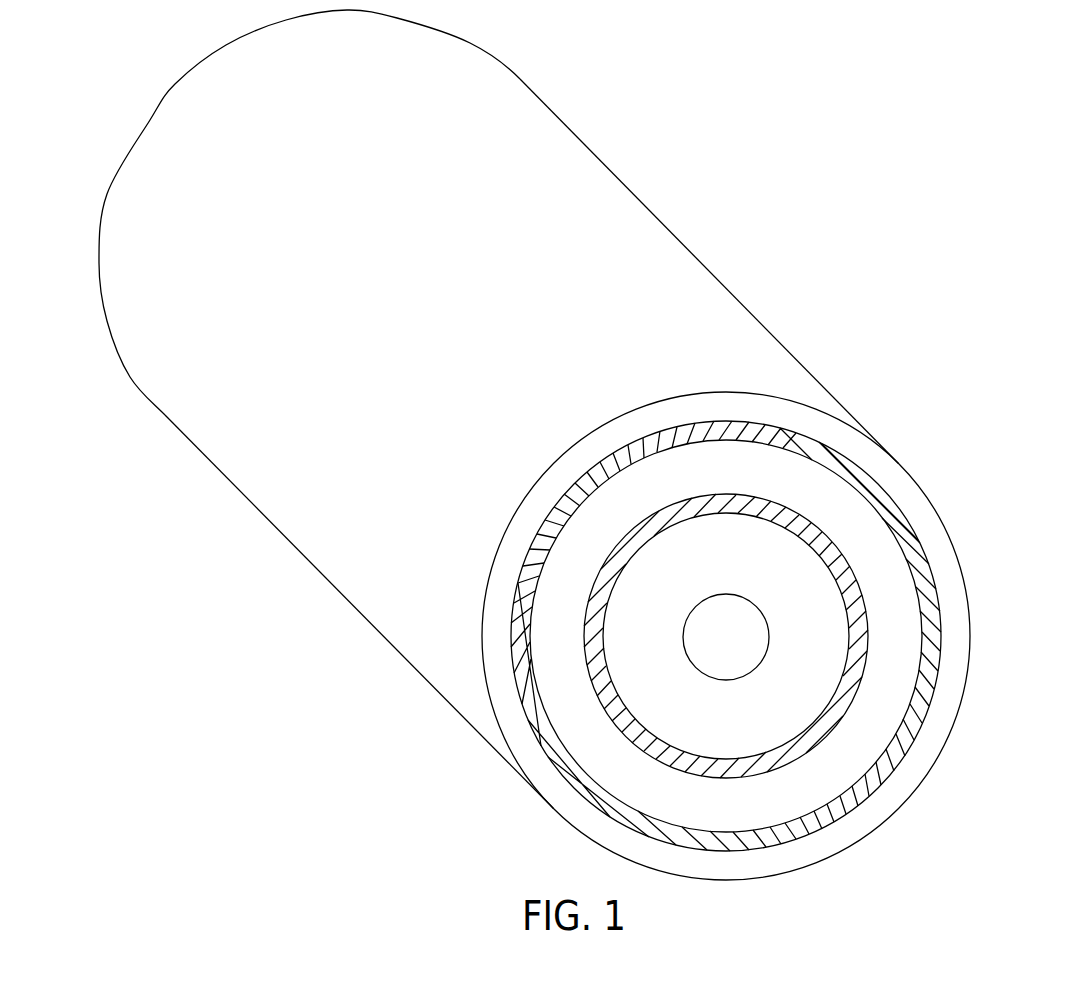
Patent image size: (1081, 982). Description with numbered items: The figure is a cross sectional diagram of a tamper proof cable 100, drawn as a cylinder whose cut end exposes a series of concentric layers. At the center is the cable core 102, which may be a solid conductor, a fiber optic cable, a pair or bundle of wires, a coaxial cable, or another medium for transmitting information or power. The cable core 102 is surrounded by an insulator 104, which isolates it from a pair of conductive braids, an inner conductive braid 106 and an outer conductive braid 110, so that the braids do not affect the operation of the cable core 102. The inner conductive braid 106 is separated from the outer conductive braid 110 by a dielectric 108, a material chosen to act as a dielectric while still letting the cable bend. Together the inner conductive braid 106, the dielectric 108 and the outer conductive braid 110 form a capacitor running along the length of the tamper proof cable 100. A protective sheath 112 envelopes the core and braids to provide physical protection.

The tamper proof cable 100 is at (823, 246).
The cable core 102 is at (748, 600).
The insulator 104 is at (792, 718).
The inner conductive braid 106 is at (850, 687).
The dielectric 108 is at (908, 667).
The outer conductive braid 110 is at (930, 617).
The protective sheath 112 is at (963, 562).